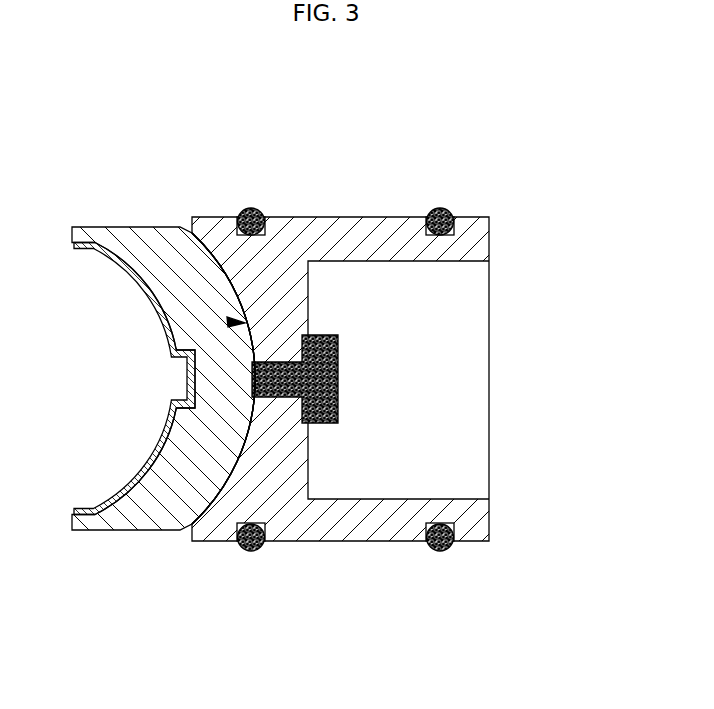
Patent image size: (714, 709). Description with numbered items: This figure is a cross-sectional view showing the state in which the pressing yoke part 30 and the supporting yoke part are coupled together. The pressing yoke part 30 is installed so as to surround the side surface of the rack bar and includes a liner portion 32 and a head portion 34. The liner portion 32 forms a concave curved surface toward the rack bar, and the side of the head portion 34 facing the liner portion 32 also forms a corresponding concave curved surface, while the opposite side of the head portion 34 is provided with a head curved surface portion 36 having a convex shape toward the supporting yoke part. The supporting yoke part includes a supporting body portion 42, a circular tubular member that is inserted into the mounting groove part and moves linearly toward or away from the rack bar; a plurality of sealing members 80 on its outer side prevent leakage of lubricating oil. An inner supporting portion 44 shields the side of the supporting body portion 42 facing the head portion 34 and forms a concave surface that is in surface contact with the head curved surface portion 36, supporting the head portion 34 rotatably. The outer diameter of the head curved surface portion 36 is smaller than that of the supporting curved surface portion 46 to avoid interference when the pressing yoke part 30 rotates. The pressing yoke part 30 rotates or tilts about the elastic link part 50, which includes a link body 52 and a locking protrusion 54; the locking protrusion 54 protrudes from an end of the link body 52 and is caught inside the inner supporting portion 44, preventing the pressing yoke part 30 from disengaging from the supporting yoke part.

The pressing yoke part 30 is at (245, 446).
The liner portion 32 is at (117, 498).
The head portion 34 is at (125, 513).
The head curved surface portion 36 is at (238, 470).
The supporting body portion 42 is at (470, 532).
The inner supporting portion 44 is at (230, 321).
The supporting curved surface portion 46 is at (235, 280).
The elastic link part 50 is at (427, 364).
The link body 52 is at (279, 368).
The locking protrusion 54 is at (340, 397).
The sealing members 80 is at (435, 208).